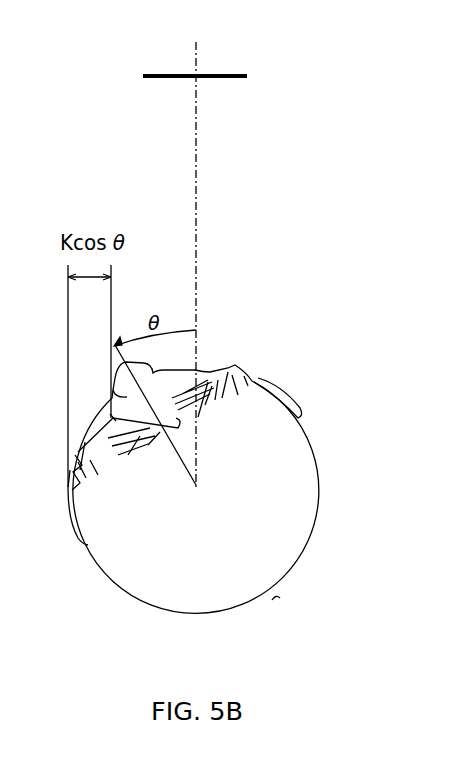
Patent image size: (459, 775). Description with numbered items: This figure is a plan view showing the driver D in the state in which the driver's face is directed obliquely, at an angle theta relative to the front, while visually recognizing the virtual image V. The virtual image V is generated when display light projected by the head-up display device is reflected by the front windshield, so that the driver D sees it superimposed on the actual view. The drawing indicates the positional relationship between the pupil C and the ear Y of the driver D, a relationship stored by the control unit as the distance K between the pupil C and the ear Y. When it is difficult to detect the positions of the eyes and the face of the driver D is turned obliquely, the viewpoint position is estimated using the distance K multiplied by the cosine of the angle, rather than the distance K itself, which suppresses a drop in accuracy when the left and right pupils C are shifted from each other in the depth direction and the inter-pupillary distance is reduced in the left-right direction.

The virtual image V is at (230, 75).
The pupil C is at (113, 418).
The ear Y is at (78, 542).
The driver D is at (275, 598).